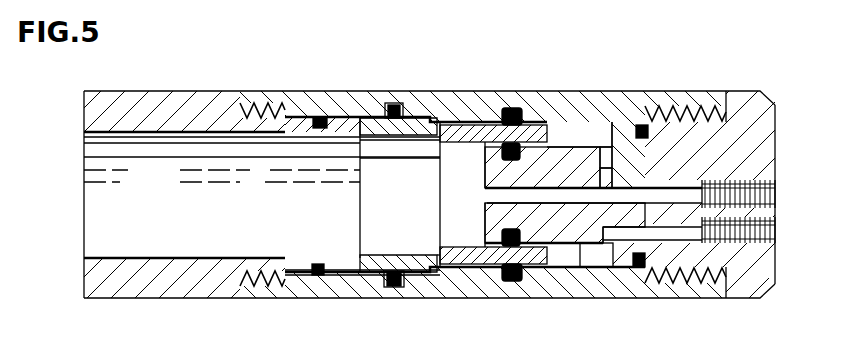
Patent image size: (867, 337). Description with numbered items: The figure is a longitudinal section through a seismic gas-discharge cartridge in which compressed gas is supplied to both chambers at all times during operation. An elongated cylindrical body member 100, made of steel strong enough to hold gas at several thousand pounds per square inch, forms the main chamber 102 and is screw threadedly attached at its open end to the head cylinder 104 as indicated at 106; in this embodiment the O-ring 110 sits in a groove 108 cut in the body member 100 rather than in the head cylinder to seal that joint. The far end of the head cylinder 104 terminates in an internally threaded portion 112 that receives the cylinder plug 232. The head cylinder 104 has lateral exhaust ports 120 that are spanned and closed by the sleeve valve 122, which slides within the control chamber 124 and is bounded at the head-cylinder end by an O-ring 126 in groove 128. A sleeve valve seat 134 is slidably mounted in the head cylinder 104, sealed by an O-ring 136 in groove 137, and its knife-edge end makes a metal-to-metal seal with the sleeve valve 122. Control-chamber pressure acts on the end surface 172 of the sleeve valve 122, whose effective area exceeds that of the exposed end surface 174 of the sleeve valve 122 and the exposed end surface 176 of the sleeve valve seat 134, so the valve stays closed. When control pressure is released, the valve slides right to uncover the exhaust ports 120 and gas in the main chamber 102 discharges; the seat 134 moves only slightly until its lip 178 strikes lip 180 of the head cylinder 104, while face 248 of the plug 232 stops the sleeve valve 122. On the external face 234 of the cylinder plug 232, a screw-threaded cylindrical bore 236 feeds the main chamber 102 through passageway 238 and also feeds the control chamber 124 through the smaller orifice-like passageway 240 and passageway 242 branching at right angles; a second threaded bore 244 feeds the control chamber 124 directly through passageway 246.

The cylindrical body member 100 is at (166, 81).
The main chamber 102 is at (170, 189).
The head cylinder 104 is at (689, 75).
The screw threaded attachment 106 is at (249, 101).
The groove 108 is at (293, 133).
The O-ring 110 is at (321, 116).
The internally threaded portion 112 is at (668, 298).
The lateral exhaust ports 120 is at (441, 96).
The sleeve valve 122 is at (462, 123).
The control chamber 124 is at (586, 145).
The O-ring 126 is at (514, 107).
The groove 128 is at (518, 142).
The sleeve valve seat 134 is at (376, 299).
The O-ring 136 is at (398, 104).
The groove 137 is at (381, 94).
The end surface 172 is at (576, 130).
The exposed end surface 174 is at (440, 253).
The exposed end surface 176 is at (357, 164).
The lip 178 is at (393, 290).
The lip 180 is at (405, 289).
The cylinder plug 232 is at (752, 90).
The external face 234 is at (782, 124).
The cylindrical bore 236 is at (780, 191).
The passageway 238 is at (488, 189).
The passageway 240 is at (614, 160).
The passageway 242 is at (628, 123).
The cylindrical bore 244 is at (779, 231).
The passageway 246 is at (618, 293).
The face 248 is at (592, 280).